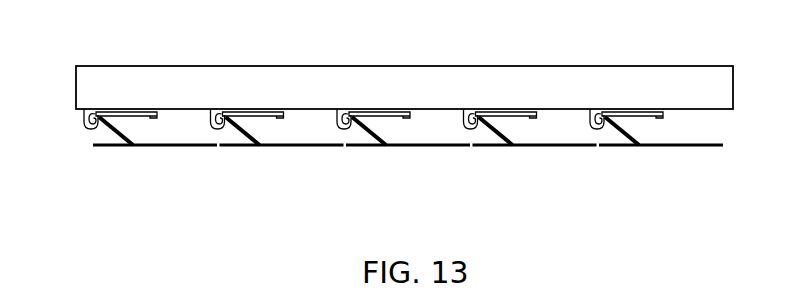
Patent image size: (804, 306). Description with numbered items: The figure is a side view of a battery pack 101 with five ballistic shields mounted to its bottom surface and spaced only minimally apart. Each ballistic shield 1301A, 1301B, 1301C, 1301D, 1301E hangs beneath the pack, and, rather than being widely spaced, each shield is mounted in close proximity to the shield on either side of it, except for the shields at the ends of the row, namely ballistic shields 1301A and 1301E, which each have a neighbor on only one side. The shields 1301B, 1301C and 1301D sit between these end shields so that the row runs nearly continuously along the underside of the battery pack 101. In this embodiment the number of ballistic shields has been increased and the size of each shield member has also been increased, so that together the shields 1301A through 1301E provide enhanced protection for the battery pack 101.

The battery pack 101 is at (536, 66).
The ballistic shield 1301A is at (155, 166).
The ballistic shield 1301B is at (309, 166).
The ballistic shield 1301C is at (439, 166).
The ballistic shield 1301D is at (567, 166).
The ballistic shield 1301E is at (694, 166).